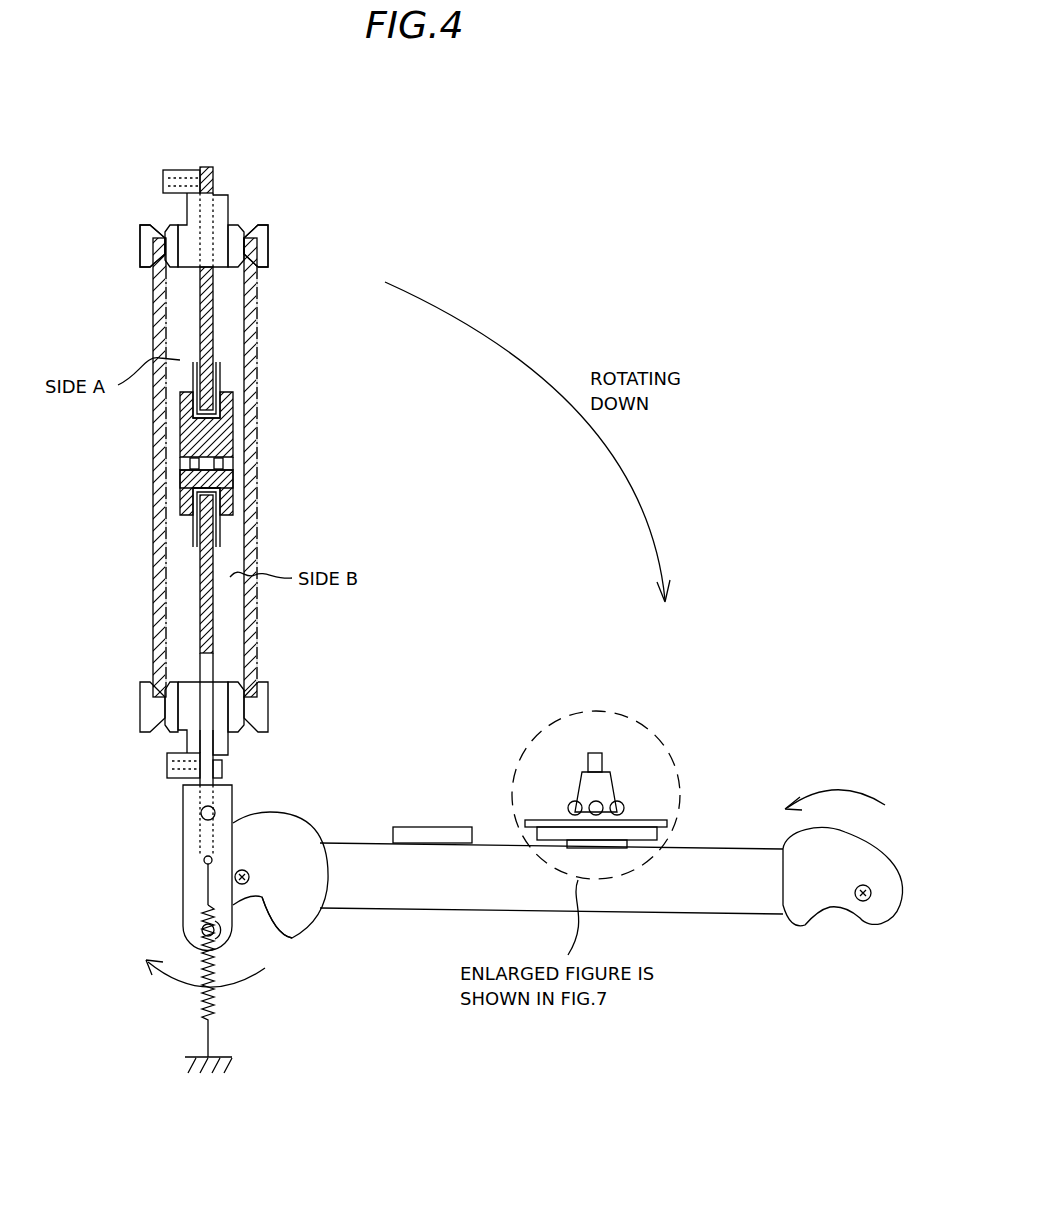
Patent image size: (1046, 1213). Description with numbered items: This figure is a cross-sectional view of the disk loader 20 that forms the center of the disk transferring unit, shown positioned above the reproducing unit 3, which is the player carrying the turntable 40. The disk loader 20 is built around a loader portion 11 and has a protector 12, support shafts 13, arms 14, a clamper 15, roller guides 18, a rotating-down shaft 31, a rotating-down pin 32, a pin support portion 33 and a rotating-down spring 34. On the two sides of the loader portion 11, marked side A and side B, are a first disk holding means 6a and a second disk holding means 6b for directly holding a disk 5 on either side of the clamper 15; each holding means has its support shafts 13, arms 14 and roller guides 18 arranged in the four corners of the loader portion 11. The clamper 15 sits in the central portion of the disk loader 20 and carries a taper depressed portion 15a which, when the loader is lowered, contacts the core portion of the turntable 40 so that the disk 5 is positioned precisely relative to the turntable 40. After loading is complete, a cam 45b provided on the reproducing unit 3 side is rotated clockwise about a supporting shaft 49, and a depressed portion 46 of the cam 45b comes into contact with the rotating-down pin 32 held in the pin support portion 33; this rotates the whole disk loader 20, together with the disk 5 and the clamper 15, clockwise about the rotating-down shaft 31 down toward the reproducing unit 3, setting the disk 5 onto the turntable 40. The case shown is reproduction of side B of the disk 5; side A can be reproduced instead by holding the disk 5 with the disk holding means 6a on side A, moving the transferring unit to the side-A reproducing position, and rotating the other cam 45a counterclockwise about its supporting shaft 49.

The reproducing unit 3 is at (702, 858).
The disk 5 is at (258, 296).
The first disk holding means 6a is at (148, 258).
The second disk holding means 6b is at (317, 265).
The loader portion 11 is at (215, 334).
The protector 12 is at (222, 385).
The support shaft 13 is at (215, 181).
The arm 14 is at (228, 207).
The clamper 15 is at (234, 433).
The taper depressed portion 15a is at (234, 470).
The roller guide 18 is at (157, 233).
The disk loader 20 is at (205, 167).
The rotating-down shaft 31 is at (201, 819).
The rotating-down pin 32 is at (195, 928).
The pin support portion 33 is at (183, 889).
The rotating-down spring 34 is at (205, 1008).
The turntable 40 is at (615, 783).
The cam 45a is at (800, 913).
The cam 45b is at (308, 915).
The depressed portion 46 is at (292, 938).
The supporting shaft 49 is at (242, 884).